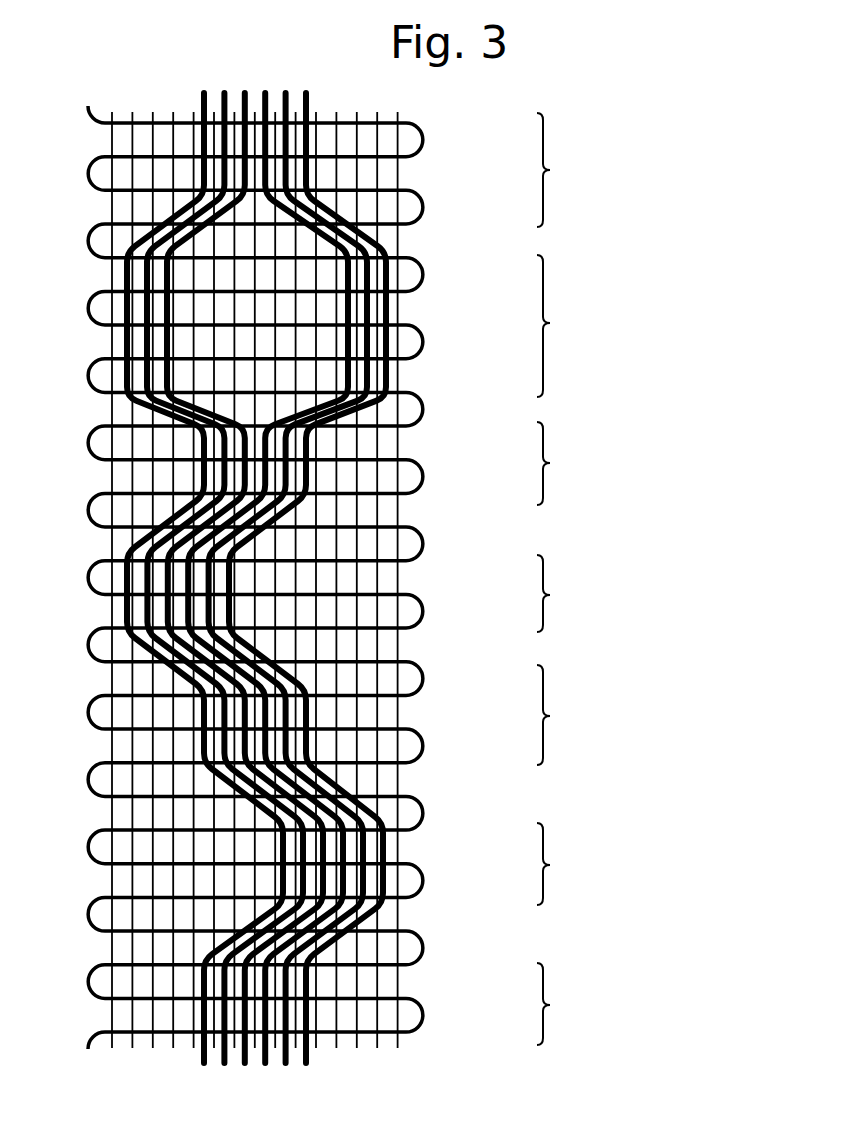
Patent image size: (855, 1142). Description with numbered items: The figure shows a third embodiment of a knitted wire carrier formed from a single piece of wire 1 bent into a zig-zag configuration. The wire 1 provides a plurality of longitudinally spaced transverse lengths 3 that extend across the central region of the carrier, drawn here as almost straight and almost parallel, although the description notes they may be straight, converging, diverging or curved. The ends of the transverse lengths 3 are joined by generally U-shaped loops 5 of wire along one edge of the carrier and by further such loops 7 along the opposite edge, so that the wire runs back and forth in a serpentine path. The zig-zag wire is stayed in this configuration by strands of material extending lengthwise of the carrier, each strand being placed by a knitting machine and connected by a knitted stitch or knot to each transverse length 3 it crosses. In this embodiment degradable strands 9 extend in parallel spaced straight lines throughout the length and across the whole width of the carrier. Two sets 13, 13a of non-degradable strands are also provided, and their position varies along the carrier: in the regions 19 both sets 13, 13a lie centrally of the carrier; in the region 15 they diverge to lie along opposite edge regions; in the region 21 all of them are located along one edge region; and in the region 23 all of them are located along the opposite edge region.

The wire 1 is at (86, 152).
The transverse lengths of wire 3 is at (368, 190).
The U-shaped loops 5 is at (423, 270).
The loops 7 is at (92, 498).
The degradable strands 9 is at (338, 540).
The set of non-degradable strands 13 is at (120, 340).
The set of non-degradable strands 13a is at (350, 347).
The region 15 is at (568, 326).
The regions 19 is at (568, 579).
The region 21 is at (568, 593).
The region 23 is at (568, 864).